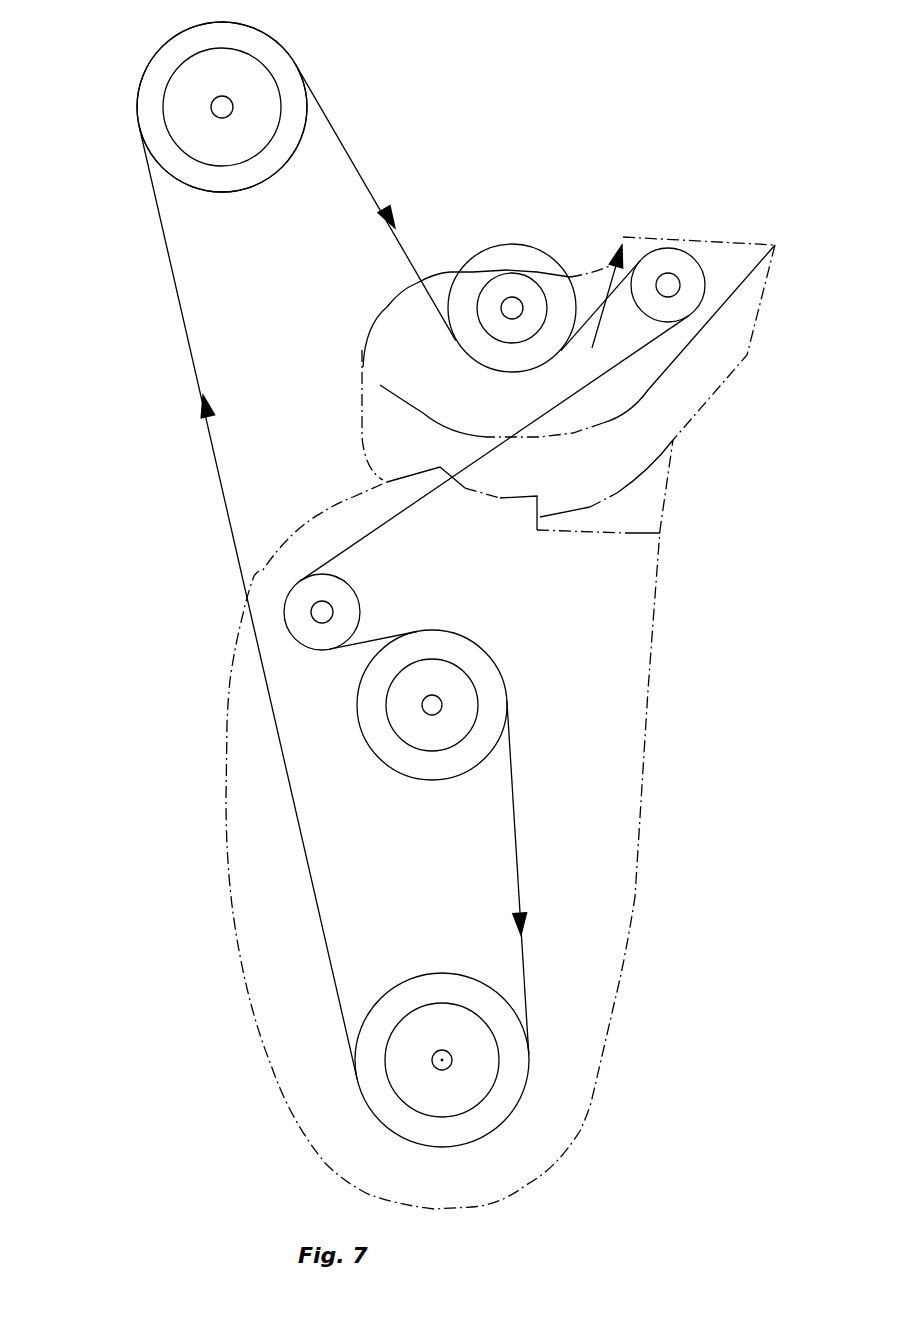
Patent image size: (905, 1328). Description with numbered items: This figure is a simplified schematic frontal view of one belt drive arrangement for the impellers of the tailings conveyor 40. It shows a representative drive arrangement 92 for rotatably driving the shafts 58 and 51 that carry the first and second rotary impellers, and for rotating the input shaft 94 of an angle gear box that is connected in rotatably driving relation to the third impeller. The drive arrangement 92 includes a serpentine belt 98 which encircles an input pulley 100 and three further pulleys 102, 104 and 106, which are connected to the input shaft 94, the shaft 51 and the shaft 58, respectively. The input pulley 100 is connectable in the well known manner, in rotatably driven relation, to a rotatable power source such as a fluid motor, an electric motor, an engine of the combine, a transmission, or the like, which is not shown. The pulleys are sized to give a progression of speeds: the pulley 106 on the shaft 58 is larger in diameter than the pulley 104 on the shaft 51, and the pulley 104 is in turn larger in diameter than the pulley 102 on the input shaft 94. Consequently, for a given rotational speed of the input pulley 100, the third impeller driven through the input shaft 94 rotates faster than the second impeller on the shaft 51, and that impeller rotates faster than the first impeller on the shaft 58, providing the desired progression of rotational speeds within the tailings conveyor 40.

The tailings conveyor 40 is at (610, 146).
The shaft 51 is at (443, 708).
The shaft 58 is at (452, 1063).
The drive arrangement 92 is at (126, 92).
The input shaft 94 is at (503, 300).
The serpentine belt 98 is at (362, 168).
The input pulley 100 is at (302, 60).
The pulley 102 is at (543, 252).
The pulley 104 is at (492, 657).
The pulley 106 is at (412, 977).